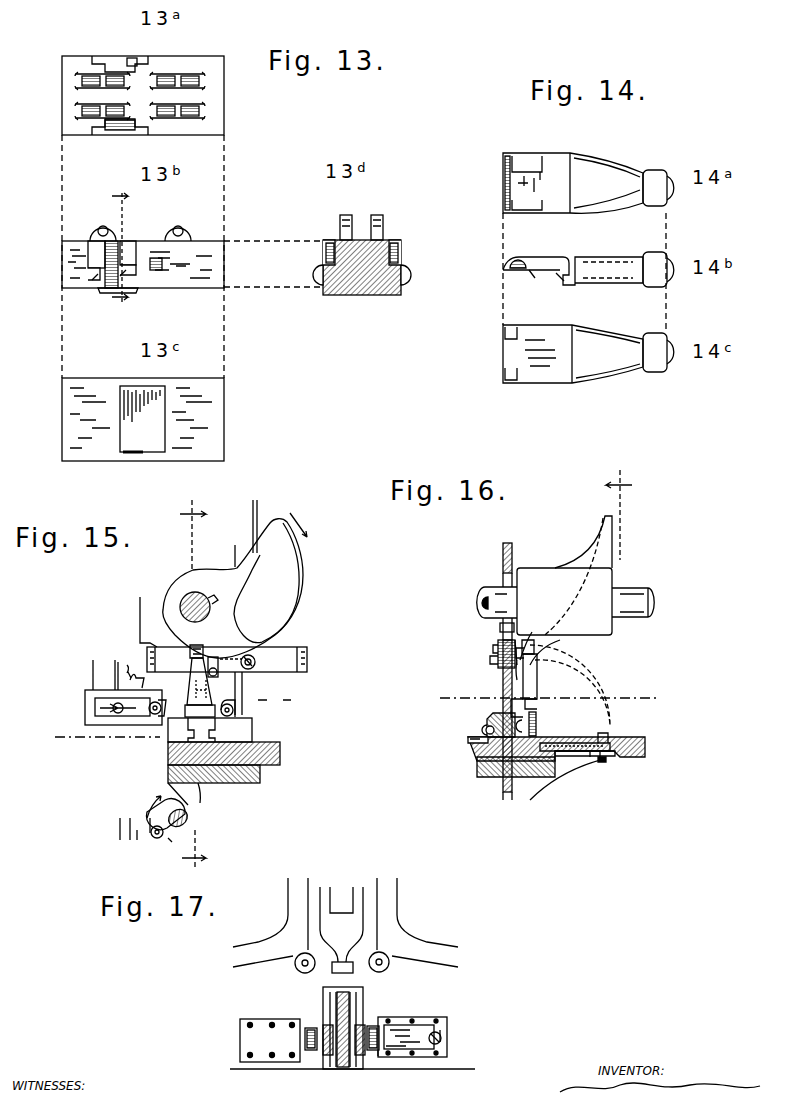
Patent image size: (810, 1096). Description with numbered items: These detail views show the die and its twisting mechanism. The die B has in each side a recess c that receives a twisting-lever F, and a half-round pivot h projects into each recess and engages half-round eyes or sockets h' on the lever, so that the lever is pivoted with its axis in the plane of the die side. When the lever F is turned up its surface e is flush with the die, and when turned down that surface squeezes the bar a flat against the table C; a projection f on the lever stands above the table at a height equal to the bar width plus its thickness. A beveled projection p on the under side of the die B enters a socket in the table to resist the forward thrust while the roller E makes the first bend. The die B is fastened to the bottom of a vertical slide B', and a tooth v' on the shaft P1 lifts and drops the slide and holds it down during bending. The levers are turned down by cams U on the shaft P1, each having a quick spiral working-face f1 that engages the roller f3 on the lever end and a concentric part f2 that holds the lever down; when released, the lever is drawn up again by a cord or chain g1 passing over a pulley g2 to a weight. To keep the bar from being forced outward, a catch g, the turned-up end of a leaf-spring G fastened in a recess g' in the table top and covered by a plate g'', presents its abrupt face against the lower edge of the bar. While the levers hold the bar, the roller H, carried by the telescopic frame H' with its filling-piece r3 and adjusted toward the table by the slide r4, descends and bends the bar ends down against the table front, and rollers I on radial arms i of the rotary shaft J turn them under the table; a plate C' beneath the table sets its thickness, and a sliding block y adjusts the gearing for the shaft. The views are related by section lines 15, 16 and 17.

In FIG. 13, the die B is at (236, 258).
In FIG. 15, the die B is at (210, 730).
In FIG. 16, the die B is at (496, 716).
In FIG. 17, the die B is at (349, 1028).
In FIG. 13, the recess c is at (117, 60).
In FIG. 13, the half-round pivot h is at (248, 162).
In FIG. 13, the beveled projection p is at (130, 292).
In FIG. 13, the bar a is at (120, 247).
In FIG. 14, the key or follower F' is at (588, 268).
In FIG. 14, the half-round eye or socket h' is at (514, 267).
In FIG. 14, the surface e is at (537, 269).
In FIG. 16, the surface e is at (531, 722).
In FIG. 14, the projection f is at (560, 283).
In FIG. 16, the projection f is at (534, 706).
In FIG. 15, the section line 16 is at (193, 685).
In FIG. 15, the section line 17 is at (163, 722).
In FIG. 16, the section line 17 is at (564, 697).
In FIG. 16, the section line 15 is at (619, 508).
In FIG. 15, the cam U is at (233, 588).
In FIG. 16, the cam U is at (564, 575).
In FIG. 15, the shaft P1 is at (194, 603).
In FIG. 16, the shaft P1 is at (565, 602).
In FIG. 15, the cord or chain g1 is at (246, 533).
In FIG. 16, the cord or chain g1 is at (600, 731).
In FIG. 15, the concentric portion of cam f2 is at (296, 518).
In FIG. 15, the spiral working-face f1 is at (286, 614).
In FIG. 16, the spiral working-face f1 is at (565, 678).
In FIG. 15, the roller f3 is at (188, 657).
In FIG. 16, the roller f3 is at (535, 655).
In FIG. 15, the pulley g2 is at (257, 672).
In FIG. 16, the pulley g2 is at (498, 647).
In FIG. 15, the twisting-lever F is at (204, 687).
In FIG. 16, the twisting-lever F is at (534, 669).
In FIG. 17, the twisting-lever F is at (334, 1050).
In FIG. 15, the vertical slide B' is at (233, 687).
In FIG. 16, the vertical slide B' is at (496, 667).
In FIG. 15, the table C is at (224, 744).
In FIG. 16, the table C is at (556, 747).
In FIG. 15, the plate C' is at (214, 786).
In FIG. 15, the frame H' is at (114, 692).
In FIG. 15, the pin r3 is at (139, 683).
In FIG. 15, the slide r4 is at (121, 708).
In FIG. 15, the roller H is at (161, 701).
In FIG. 15, the rotary shaft J is at (169, 812).
In FIG. 15, the roller I is at (150, 832).
In FIG. 15, the radial arm i is at (173, 845).
In FIG. 16, the tooth v' is at (498, 631).
In FIG. 16, the catch or pawl g is at (575, 736).
In FIG. 17, the catch or pawl g is at (342, 1047).
In FIG. 16, the leaf-spring or spring-plate G is at (585, 737).
In FIG. 17, the leaf-spring or spring-plate G is at (396, 1035).
In FIG. 16, the recess g' is at (568, 775).
In FIG. 17, the recess g' is at (453, 1045).
In FIG. 17, the roller E is at (345, 931).
In FIG. 17, the block D is at (334, 961).
In FIG. 17, the plate g'' is at (270, 1040).
In FIG. 17, the block y is at (375, 1058).